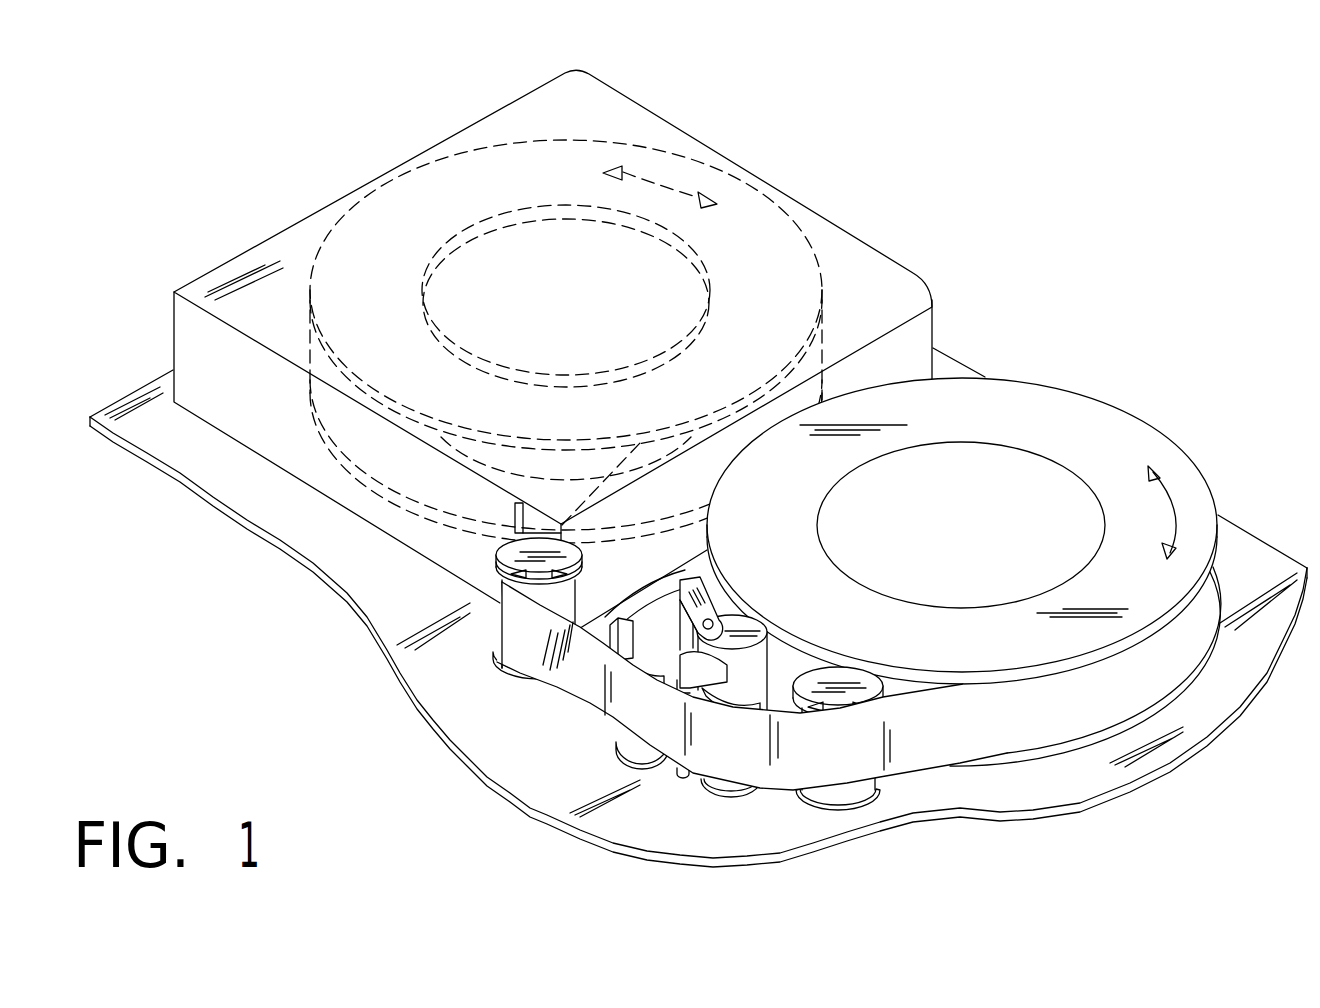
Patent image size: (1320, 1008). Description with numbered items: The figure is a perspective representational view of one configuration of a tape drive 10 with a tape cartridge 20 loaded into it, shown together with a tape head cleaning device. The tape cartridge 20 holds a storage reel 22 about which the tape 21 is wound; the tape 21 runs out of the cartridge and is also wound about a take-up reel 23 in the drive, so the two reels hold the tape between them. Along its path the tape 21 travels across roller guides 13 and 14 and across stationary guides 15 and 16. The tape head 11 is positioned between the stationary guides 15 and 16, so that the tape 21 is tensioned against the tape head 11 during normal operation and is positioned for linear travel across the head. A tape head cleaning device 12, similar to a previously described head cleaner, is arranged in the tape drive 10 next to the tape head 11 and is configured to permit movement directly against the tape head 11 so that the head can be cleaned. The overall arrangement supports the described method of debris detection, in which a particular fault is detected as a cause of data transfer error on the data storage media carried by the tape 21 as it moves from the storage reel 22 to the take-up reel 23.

The tape drive 10 is at (1018, 176).
The tape head 11 is at (678, 779).
The tape head cleaning device 12 is at (690, 582).
The roller guide 13 is at (494, 553).
The roller guide 14 is at (858, 665).
The stationary guide 15 is at (622, 753).
The stationary guide 16 is at (721, 793).
The tape cartridge 20 is at (617, 113).
The tape 21 is at (572, 678).
The storage reel 22 is at (758, 210).
The take-up reel 23 is at (1082, 397).